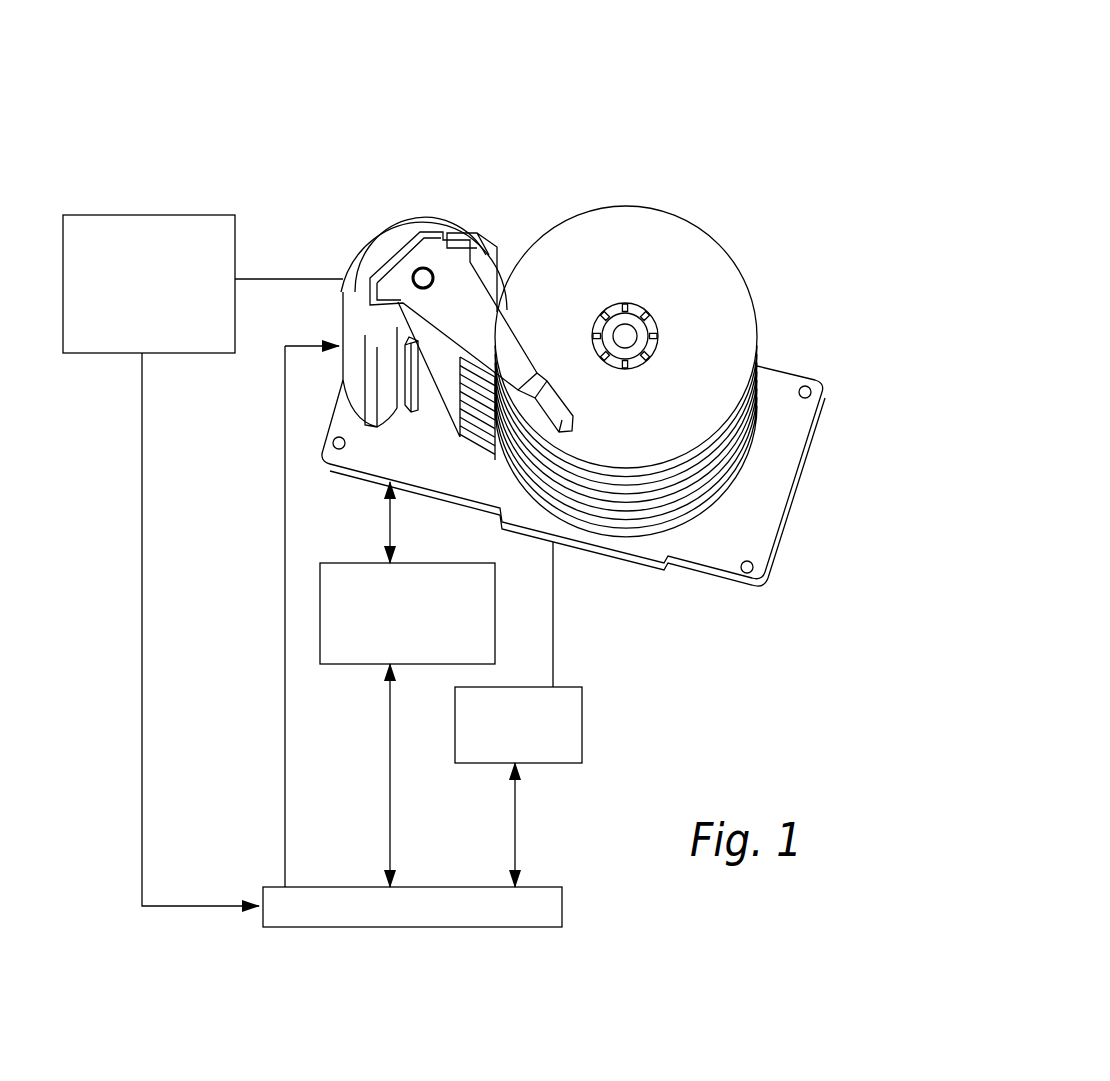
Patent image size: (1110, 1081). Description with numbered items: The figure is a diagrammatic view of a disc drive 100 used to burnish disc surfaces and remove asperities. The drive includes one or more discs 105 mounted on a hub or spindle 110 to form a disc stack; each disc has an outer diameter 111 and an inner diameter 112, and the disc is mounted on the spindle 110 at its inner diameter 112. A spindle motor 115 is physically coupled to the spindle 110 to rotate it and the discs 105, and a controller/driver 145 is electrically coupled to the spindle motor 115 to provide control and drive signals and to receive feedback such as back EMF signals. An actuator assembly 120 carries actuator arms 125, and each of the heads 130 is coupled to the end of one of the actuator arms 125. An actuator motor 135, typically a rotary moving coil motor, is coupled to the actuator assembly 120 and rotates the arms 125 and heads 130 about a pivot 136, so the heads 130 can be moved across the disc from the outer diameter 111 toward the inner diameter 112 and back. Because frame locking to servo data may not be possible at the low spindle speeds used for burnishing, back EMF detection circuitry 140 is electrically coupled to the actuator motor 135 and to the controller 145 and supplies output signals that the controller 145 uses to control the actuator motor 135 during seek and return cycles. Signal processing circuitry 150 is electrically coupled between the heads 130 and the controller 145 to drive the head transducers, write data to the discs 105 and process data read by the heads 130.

The disc drive 100 is at (768, 128).
The discs 105 is at (748, 262).
The spindle 110 is at (658, 342).
The outer diameter 111 is at (686, 252).
The inner diameter 112 is at (680, 379).
The spindle motor 115 is at (582, 735).
The actuator assembly 120 is at (516, 242).
The actuator arms 125 is at (513, 343).
The heads 130 is at (562, 430).
The actuator motor 135 is at (404, 184).
The pivot 136 is at (430, 278).
The back EMF detection circuitry 140 is at (122, 215).
The controller/driver 145 is at (562, 916).
The signal processing circuitry 150 is at (340, 665).